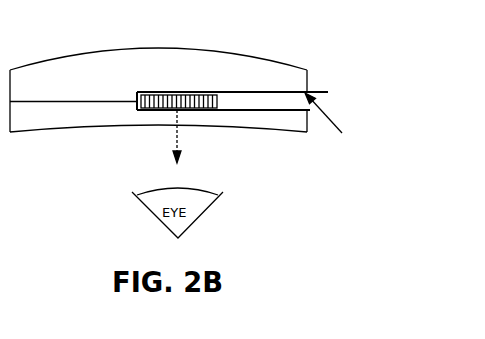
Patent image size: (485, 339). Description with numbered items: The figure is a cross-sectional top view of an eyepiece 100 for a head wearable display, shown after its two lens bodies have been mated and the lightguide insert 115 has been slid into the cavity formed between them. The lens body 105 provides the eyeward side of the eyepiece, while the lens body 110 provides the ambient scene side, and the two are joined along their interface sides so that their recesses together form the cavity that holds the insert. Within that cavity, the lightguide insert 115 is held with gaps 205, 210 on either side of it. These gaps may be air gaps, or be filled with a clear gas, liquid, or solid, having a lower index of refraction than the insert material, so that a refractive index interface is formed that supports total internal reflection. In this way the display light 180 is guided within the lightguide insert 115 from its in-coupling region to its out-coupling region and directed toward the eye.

The eyepiece 100 is at (90, 170).
The lens body 105 is at (47, 126).
The lens body 110 is at (95, 80).
The lightguide insert 115 is at (228, 93).
The display light 180 is at (178, 136).
The gap 205 is at (281, 116).
The gap 210 is at (290, 86).